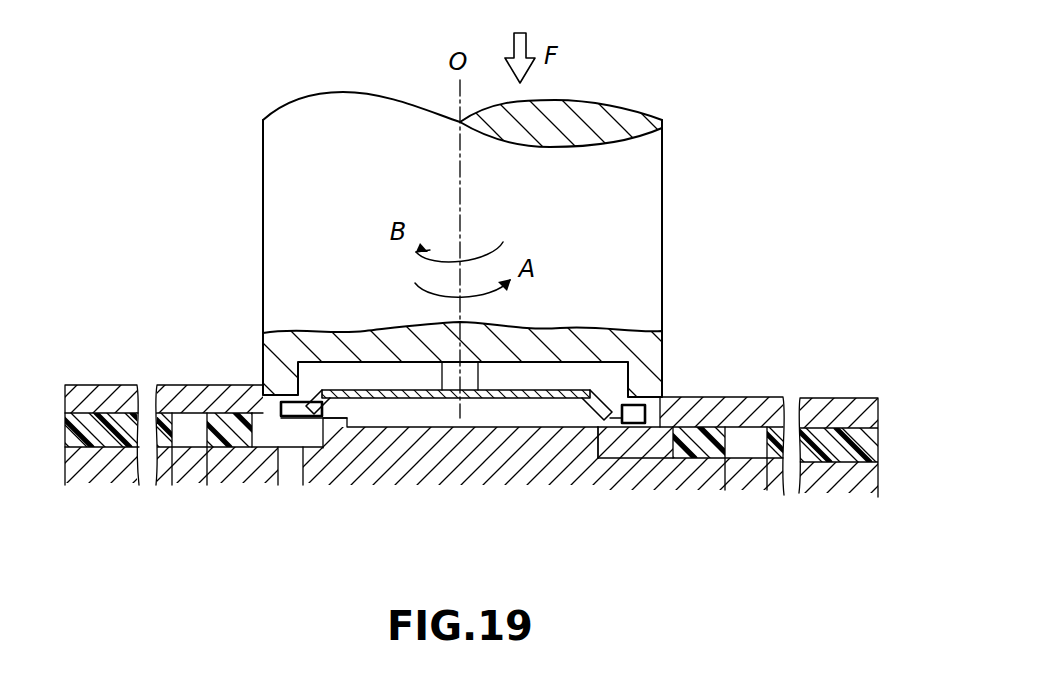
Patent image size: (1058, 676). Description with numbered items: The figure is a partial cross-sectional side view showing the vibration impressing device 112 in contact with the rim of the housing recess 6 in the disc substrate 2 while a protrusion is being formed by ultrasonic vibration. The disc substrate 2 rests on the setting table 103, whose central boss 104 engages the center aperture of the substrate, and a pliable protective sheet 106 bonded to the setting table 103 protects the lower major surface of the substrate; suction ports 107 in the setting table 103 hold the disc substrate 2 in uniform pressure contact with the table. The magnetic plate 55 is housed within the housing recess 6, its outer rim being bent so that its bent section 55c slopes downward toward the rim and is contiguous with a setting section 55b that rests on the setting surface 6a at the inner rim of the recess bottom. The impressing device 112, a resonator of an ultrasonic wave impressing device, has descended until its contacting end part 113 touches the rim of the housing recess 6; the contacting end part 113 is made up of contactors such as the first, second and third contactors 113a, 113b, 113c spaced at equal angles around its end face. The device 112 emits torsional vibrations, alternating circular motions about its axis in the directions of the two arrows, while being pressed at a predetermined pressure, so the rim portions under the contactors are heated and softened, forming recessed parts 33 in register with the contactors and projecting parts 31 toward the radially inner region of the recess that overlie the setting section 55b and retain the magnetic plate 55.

The disc substrate 2 is at (773, 397).
The housing recess 6 is at (345, 428).
The setting surface 6a is at (308, 420).
The projecting parts 31 is at (283, 395).
The recessed parts 33 is at (670, 470).
The magnetic plate 55 is at (393, 388).
The setting section 55b is at (611, 410).
The bent section 55c is at (313, 410).
The setting table 103 is at (860, 484).
The central boss 104 is at (517, 390).
The protective sheet 106 is at (878, 443).
The suction ports 107 is at (625, 463).
The vibration impressing device 112 is at (645, 208).
The contacting end part 113 is at (672, 354).
The first contactor 113a is at (275, 382).
The second contactor 113b is at (466, 385).
The third contactor 113c is at (660, 390).